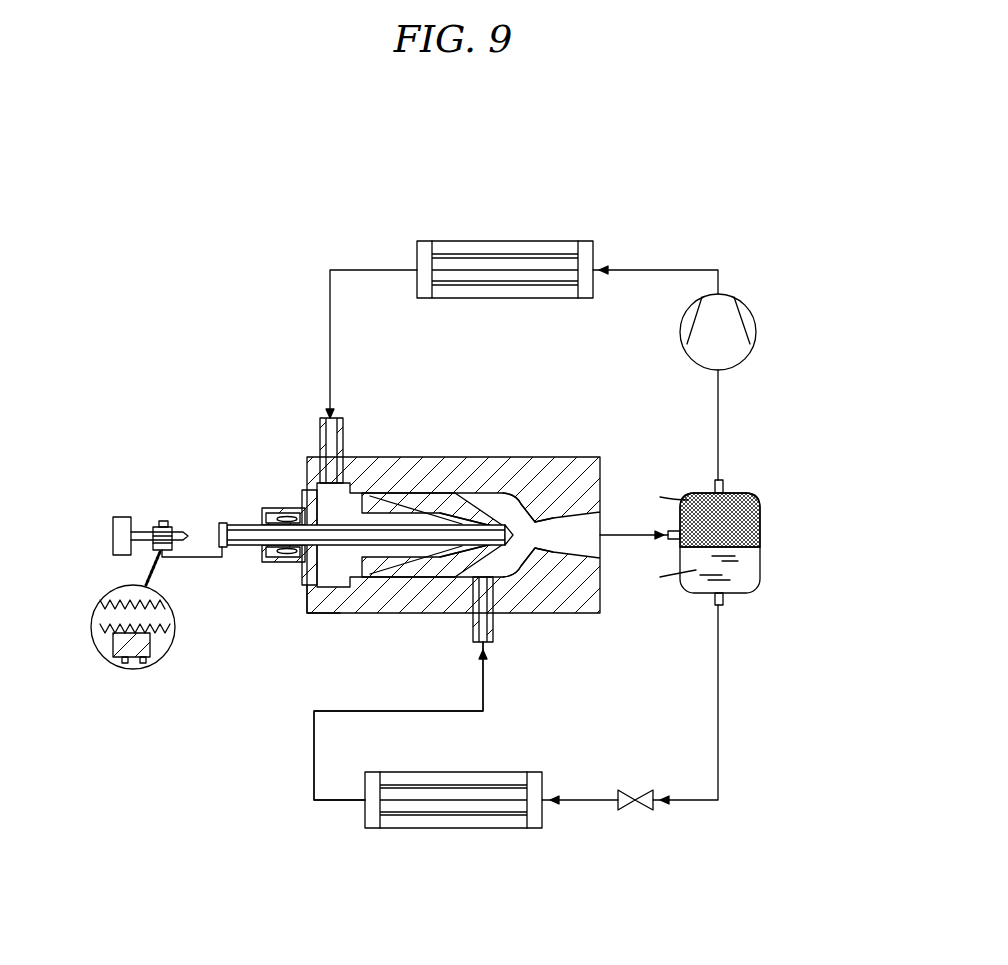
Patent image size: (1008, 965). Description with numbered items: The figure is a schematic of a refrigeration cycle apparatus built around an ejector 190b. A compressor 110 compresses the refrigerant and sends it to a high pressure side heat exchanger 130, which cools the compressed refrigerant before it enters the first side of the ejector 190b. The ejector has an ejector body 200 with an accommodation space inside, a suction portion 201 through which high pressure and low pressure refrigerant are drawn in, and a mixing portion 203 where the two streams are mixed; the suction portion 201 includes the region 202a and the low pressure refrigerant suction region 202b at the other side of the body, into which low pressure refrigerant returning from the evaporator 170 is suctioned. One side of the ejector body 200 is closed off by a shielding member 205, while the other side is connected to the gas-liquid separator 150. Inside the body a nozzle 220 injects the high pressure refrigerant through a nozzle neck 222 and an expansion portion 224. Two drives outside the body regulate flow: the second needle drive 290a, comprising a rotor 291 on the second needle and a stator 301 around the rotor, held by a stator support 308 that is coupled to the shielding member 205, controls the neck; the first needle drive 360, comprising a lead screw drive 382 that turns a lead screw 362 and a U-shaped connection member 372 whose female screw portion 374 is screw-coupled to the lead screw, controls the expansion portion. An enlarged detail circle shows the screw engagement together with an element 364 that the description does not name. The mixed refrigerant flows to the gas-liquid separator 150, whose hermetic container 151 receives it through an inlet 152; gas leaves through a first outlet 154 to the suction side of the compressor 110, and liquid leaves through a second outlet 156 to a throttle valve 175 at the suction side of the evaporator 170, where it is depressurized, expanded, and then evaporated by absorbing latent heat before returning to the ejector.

The compressor 110 is at (758, 312).
The high pressure side heat exchanger 130 is at (512, 238).
The gas-liquid separator 150 is at (758, 535).
The hermetic container 151 is at (762, 522).
The inlet 152 is at (748, 548).
The first outlet 154 is at (724, 485).
The second outlet 156 is at (772, 589).
The evaporator 170 is at (430, 832).
The throttle valve 175 is at (640, 812).
The ejector 190b is at (305, 664).
The ejector body 200 is at (432, 478).
The suction portion 201 is at (436, 474).
The first inlet port 202a is at (345, 430).
The low pressure refrigerant suction region 202b is at (497, 630).
The mixing portion 203 is at (508, 525).
The shielding member 205 is at (307, 600).
The nozzle 220 is at (372, 585).
The nozzle neck 222 is at (413, 580).
The expansion portion 224 is at (450, 548).
The second needle drive 290a is at (352, 484).
The rotor 291 is at (266, 500).
The stator 301 is at (260, 520).
The stator support 308 is at (297, 497).
The first needle drive 360 is at (132, 546).
The lead screw 362 is at (150, 532).
The rack teeth 364 is at (96, 645).
The connection member 372 is at (198, 545).
The female screw portion 374 is at (155, 640).
The lead screw drive 382 is at (120, 533).